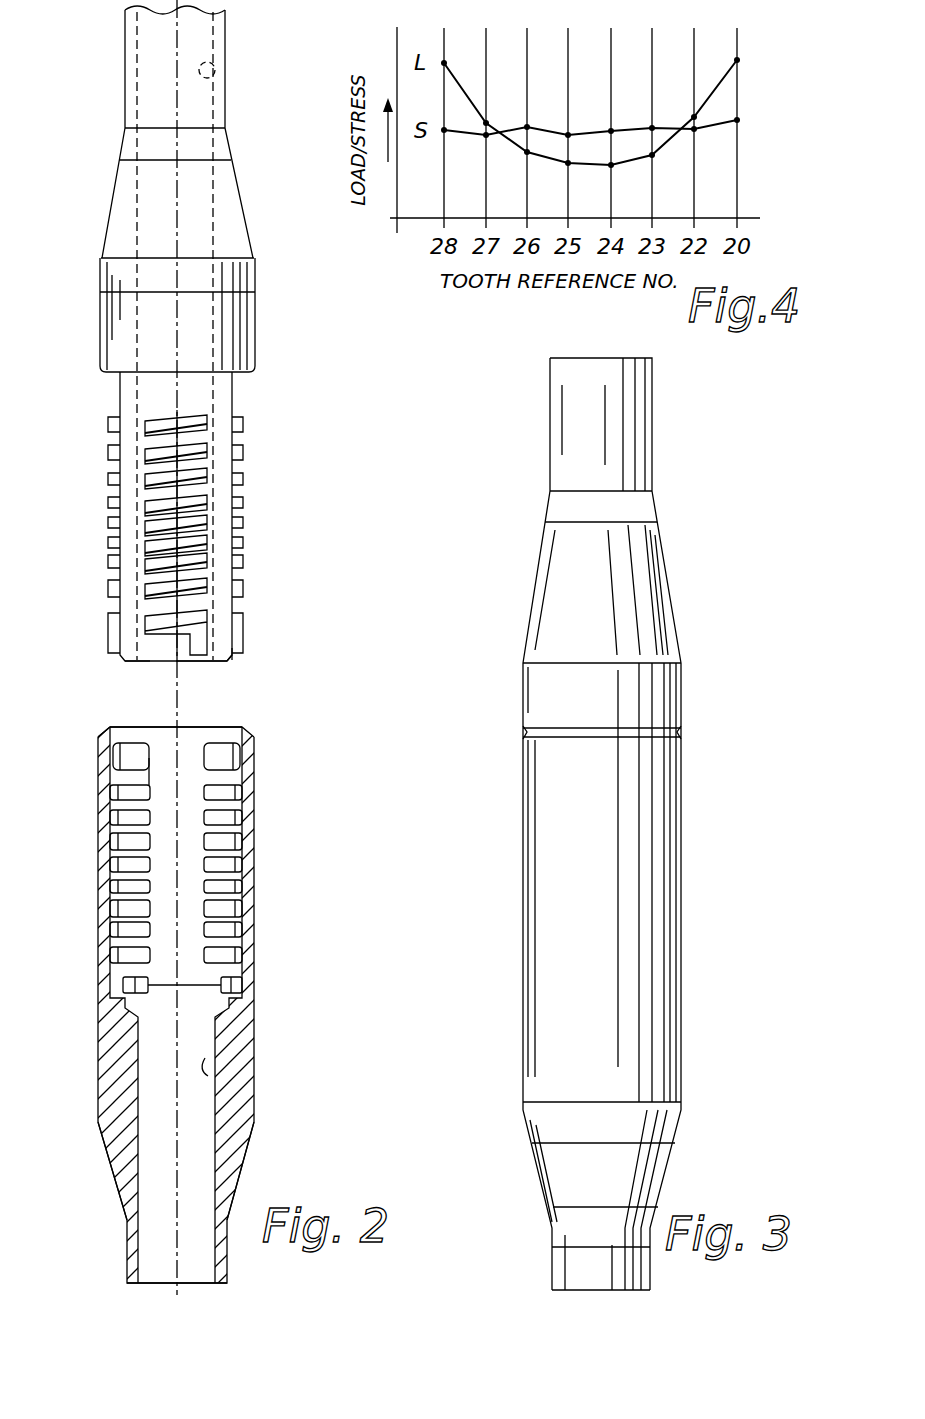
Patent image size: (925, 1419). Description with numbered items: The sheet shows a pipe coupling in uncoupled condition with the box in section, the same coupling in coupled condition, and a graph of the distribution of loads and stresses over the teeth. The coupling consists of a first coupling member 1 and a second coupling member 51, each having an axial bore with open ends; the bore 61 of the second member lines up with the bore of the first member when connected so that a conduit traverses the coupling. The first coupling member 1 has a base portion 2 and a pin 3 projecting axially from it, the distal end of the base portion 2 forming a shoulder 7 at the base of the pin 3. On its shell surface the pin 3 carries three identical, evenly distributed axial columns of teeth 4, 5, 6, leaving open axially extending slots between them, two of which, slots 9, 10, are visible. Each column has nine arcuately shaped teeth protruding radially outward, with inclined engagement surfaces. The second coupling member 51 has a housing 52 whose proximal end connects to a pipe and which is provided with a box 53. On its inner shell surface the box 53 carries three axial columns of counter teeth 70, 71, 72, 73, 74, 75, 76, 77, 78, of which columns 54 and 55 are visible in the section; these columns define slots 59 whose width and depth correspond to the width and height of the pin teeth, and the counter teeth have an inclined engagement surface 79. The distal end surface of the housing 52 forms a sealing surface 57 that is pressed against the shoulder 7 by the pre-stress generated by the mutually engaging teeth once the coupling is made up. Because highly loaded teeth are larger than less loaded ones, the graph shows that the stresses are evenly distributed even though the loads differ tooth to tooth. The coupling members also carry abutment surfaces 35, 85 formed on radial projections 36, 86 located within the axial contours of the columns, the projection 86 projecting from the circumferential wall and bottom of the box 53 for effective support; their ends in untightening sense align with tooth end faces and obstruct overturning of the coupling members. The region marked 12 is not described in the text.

In FIG. 2, the first coupling member 1 is at (290, 419).
In FIG. 3, the first coupling member 1 is at (690, 456).
In FIG. 2, the base portion 2 is at (246, 238).
In FIG. 3, the base portion 2 is at (662, 593).
In FIG. 2, the pin 3 is at (247, 494).
In FIG. 2, the column of teeth 4 is at (108, 408).
In FIG. 2, the column of teeth 5 is at (185, 413).
In FIG. 3, the column of teeth 5 is at (690, 923).
In FIG. 2, the column of teeth 6 is at (246, 409).
In FIG. 3, the shoulder 7 is at (580, 722).
In FIG. 2, the slot 9 is at (128, 418).
In FIG. 2, the slot 10 is at (222, 421).
In FIG. 2, the detail region 12 is at (215, 56).
In FIG. 2, the abutment surface 35 is at (130, 679).
In FIG. 2, the radial projection 36 is at (195, 679).
In FIG. 2, the second coupling member 51 is at (264, 948).
In FIG. 2, the housing 52 is at (260, 1110).
In FIG. 3, the housing 52 is at (676, 1022).
In FIG. 2, the box 53 is at (268, 668).
In FIG. 2, the column of counter teeth 54 is at (128, 727).
In FIG. 2, the column of counter teeth 55 is at (264, 687).
In FIG. 2, the sealing surface 57 is at (100, 727).
In FIG. 3, the sealing surface 57 is at (638, 719).
In FIG. 2, the slot 59 is at (252, 652).
In FIG. 2, the axial bore 61 is at (205, 1058).
In FIG. 2, the counter tooth 70 is at (115, 954).
In FIG. 2, the counter tooth 71 is at (115, 930).
In FIG. 2, the counter tooth 72 is at (115, 908).
In FIG. 2, the counter tooth 73 is at (115, 886).
In FIG. 2, the counter tooth 74 is at (115, 865).
In FIG. 2, the counter tooth 75 is at (115, 842).
In FIG. 2, the counter tooth 76 is at (115, 818).
In FIG. 2, the counter tooth 77 is at (115, 790).
In FIG. 2, the counter tooth 78 is at (113, 757).
In FIG. 2, the engagement surface 79 is at (148, 805).
In FIG. 2, the abutment surface 85 is at (125, 984).
In FIG. 2, the radial projection 86 is at (150, 987).